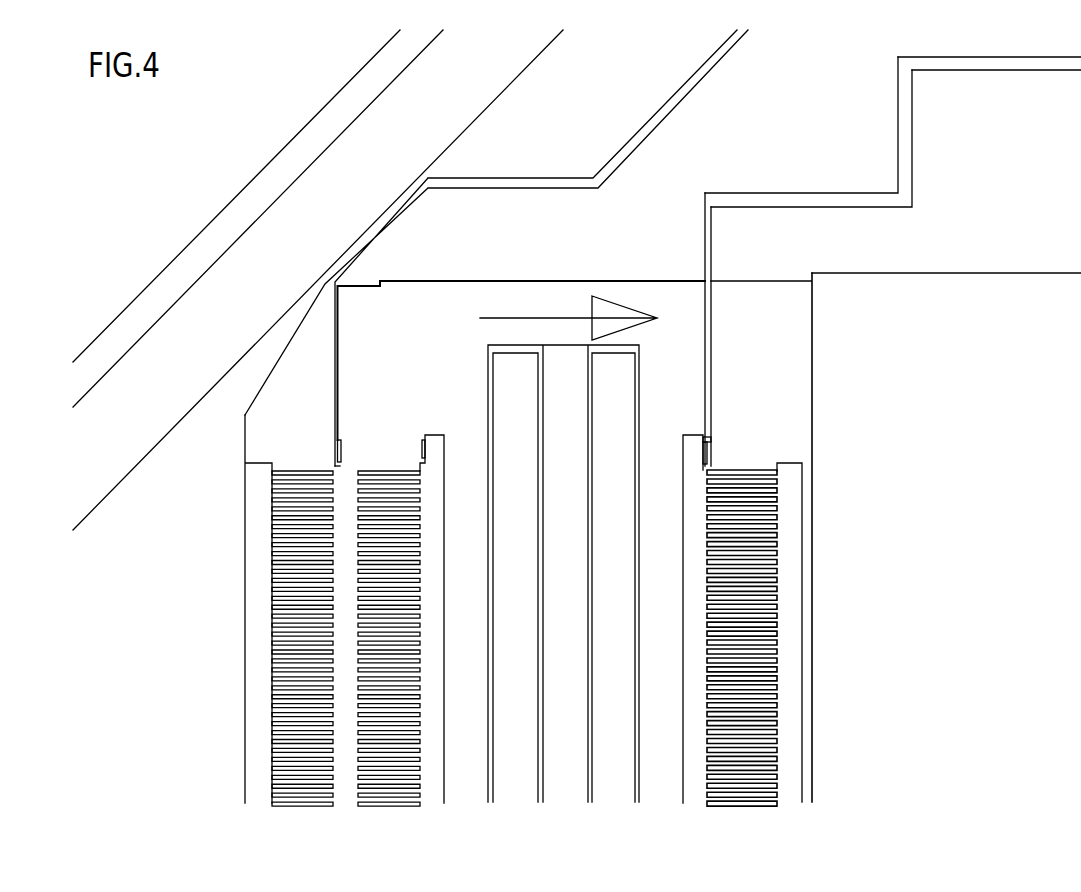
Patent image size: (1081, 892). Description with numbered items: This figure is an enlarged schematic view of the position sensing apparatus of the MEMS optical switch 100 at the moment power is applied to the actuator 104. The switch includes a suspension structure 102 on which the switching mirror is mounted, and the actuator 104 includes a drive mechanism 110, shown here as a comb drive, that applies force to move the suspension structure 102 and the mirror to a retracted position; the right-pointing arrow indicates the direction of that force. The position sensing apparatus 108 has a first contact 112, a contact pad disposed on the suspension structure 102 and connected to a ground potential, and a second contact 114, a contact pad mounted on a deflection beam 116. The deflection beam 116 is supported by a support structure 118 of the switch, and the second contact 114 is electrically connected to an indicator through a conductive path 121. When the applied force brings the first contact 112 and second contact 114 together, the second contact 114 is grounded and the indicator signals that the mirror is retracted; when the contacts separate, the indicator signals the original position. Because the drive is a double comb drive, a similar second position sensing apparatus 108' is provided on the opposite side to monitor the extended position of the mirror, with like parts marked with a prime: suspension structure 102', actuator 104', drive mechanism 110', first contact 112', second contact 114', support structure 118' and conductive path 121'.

The MEMS optical switch 100 is at (818, 110).
The suspension structure 102 is at (674, 619).
The suspension structure 102' is at (431, 638).
The actuator 104 is at (725, 681).
The actuator 104' is at (357, 681).
The position sensing apparatus 108 is at (784, 537).
The position sensing apparatus 108' is at (520, 373).
The drive mechanism 110 is at (795, 651).
The drive mechanism 110' is at (285, 626).
The first contact 112 is at (679, 427).
The first contact 112' is at (401, 434).
The second contact 114 is at (690, 403).
The second contact 114' is at (362, 424).
The deflection beam 116 is at (713, 323).
The support structure 118 is at (808, 140).
The support structure 118' is at (410, 280).
The conductive path 121 is at (946, 255).
The conductive path 121' is at (989, 44).